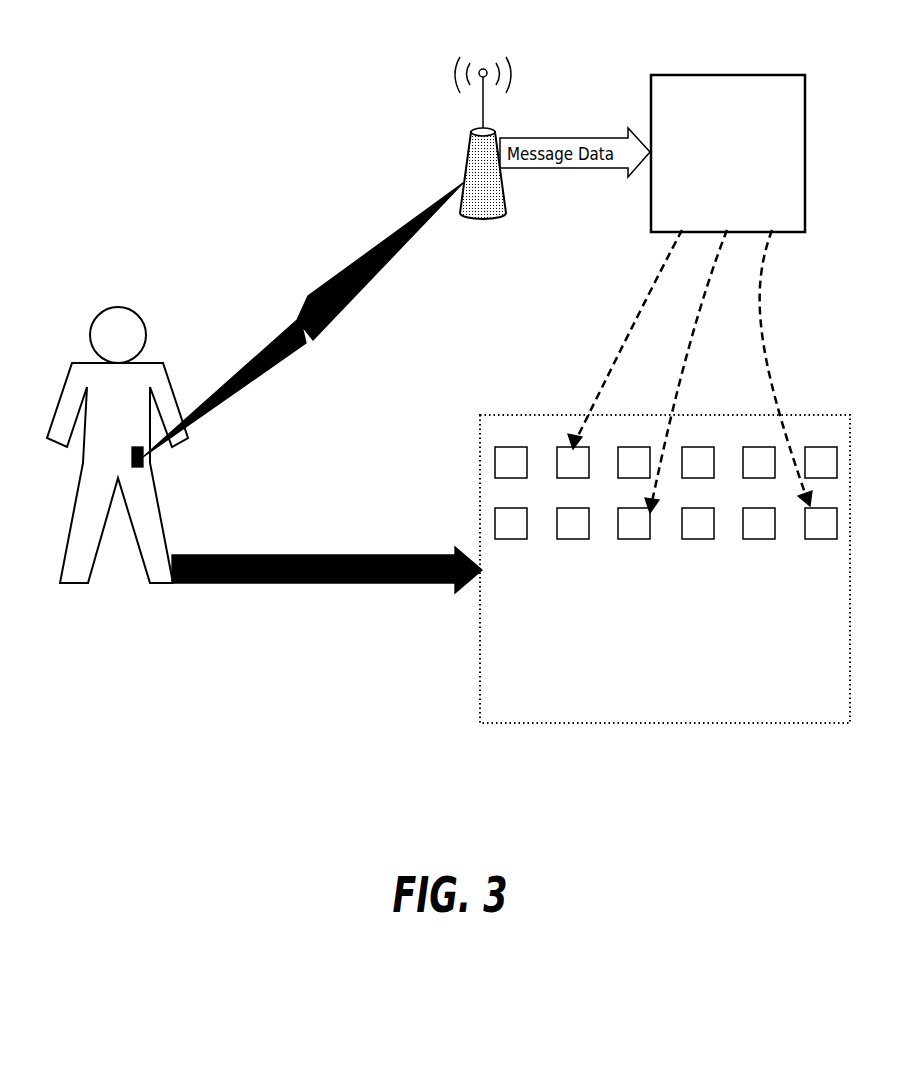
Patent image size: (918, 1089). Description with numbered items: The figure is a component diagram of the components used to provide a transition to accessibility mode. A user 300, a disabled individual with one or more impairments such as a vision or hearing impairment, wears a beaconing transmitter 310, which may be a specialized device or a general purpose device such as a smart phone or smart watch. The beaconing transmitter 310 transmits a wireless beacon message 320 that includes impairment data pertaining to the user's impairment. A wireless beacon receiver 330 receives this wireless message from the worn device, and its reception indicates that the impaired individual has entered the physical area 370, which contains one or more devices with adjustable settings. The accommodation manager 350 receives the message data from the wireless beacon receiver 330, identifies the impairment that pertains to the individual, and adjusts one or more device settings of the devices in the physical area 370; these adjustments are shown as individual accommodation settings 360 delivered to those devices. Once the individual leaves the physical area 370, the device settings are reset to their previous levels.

The user 300 is at (116, 308).
The beaconing transmitter 310 is at (145, 462).
The beacon message 320 is at (338, 297).
The wireless beacon receiver 330 is at (474, 132).
The accommodation manager 350 is at (714, 193).
The individual accommodation settings 360 is at (755, 325).
The physical area 370 is at (653, 715).